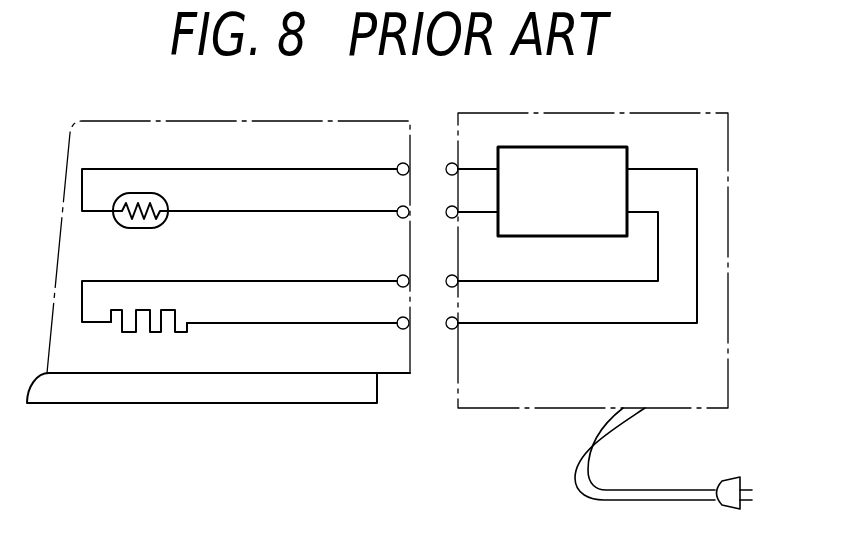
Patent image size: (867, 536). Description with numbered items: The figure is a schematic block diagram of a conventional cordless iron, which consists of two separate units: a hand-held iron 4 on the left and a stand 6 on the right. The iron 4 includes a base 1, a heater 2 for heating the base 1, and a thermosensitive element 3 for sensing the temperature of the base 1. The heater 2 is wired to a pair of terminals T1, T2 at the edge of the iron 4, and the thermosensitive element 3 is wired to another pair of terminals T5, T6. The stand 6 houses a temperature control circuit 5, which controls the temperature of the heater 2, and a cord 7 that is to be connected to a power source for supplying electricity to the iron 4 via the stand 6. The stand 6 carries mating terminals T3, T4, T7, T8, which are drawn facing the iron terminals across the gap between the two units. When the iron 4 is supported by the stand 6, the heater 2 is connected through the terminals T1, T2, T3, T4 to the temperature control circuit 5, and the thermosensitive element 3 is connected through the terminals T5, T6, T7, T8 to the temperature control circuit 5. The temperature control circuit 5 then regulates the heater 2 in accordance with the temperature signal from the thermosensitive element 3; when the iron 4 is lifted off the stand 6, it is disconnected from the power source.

The base 1 is at (156, 396).
The heater 2 is at (168, 340).
The thermosensitive element 3 is at (165, 224).
The iron 4 is at (125, 121).
The temperature control circuit 5 is at (628, 157).
The stand 6 is at (689, 113).
The cord 7 is at (668, 488).
The terminal T1 is at (397, 277).
The terminal T2 is at (397, 320).
The terminal T3 is at (456, 285).
The terminal T4 is at (456, 327).
The terminal T5 is at (397, 165).
The terminal T6 is at (397, 208).
The terminal T7 is at (446, 167).
The terminal T8 is at (456, 216).